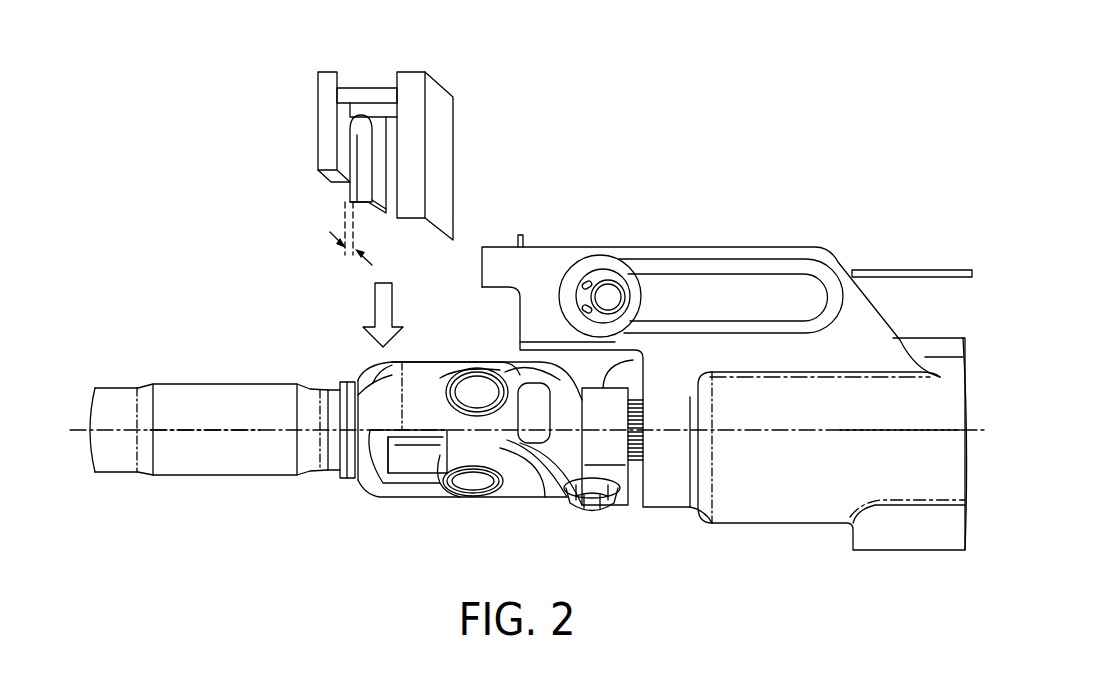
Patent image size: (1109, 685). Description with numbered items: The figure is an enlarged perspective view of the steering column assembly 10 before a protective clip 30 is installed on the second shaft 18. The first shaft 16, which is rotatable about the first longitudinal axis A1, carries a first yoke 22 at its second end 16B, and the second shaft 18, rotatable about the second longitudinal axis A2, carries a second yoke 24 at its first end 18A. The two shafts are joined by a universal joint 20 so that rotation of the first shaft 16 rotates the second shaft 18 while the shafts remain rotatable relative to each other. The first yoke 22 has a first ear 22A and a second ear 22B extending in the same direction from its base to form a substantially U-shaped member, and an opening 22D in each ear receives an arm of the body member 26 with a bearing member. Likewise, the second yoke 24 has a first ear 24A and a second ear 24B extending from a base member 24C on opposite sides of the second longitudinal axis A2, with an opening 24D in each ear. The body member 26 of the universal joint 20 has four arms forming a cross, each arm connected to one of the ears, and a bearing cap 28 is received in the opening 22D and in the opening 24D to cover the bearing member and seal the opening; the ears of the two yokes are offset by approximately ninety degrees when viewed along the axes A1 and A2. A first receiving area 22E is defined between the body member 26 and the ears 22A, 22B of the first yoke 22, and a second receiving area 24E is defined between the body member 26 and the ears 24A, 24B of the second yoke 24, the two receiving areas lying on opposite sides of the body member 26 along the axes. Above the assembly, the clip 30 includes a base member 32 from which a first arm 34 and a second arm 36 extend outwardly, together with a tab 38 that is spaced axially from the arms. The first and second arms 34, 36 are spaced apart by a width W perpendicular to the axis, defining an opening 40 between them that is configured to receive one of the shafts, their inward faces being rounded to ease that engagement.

The steering column assembly 10 is at (200, 265).
The first shaft 16 is at (727, 417).
The second end 16B is at (633, 358).
The second shaft 18 is at (222, 413).
The first end 18A is at (334, 470).
The universal joint 20 is at (464, 422).
The first yoke 22 is at (527, 411).
The first ear 22A is at (507, 497).
The second ear 22B is at (500, 372).
The opening 22D is at (512, 500).
The first receiving area 22E is at (537, 382).
The second yoke 24 is at (426, 437).
The first ear 24A is at (425, 380).
The second ear 24B is at (422, 500).
The base member 24C is at (375, 380).
The opening 24D is at (455, 366).
The second receiving area 24E is at (415, 445).
The body member 26 is at (570, 447).
The bearing cap 28 is at (474, 393).
The clip 30 is at (361, 158).
The base member 32 is at (380, 88).
The first arm 34 is at (318, 152).
The second arm 36 is at (364, 205).
The tab 38 is at (413, 72).
The opening 40 is at (349, 183).
The first longitudinal axis A1 is at (896, 432).
The second longitudinal axis A2 is at (200, 432).
The width W is at (350, 255).